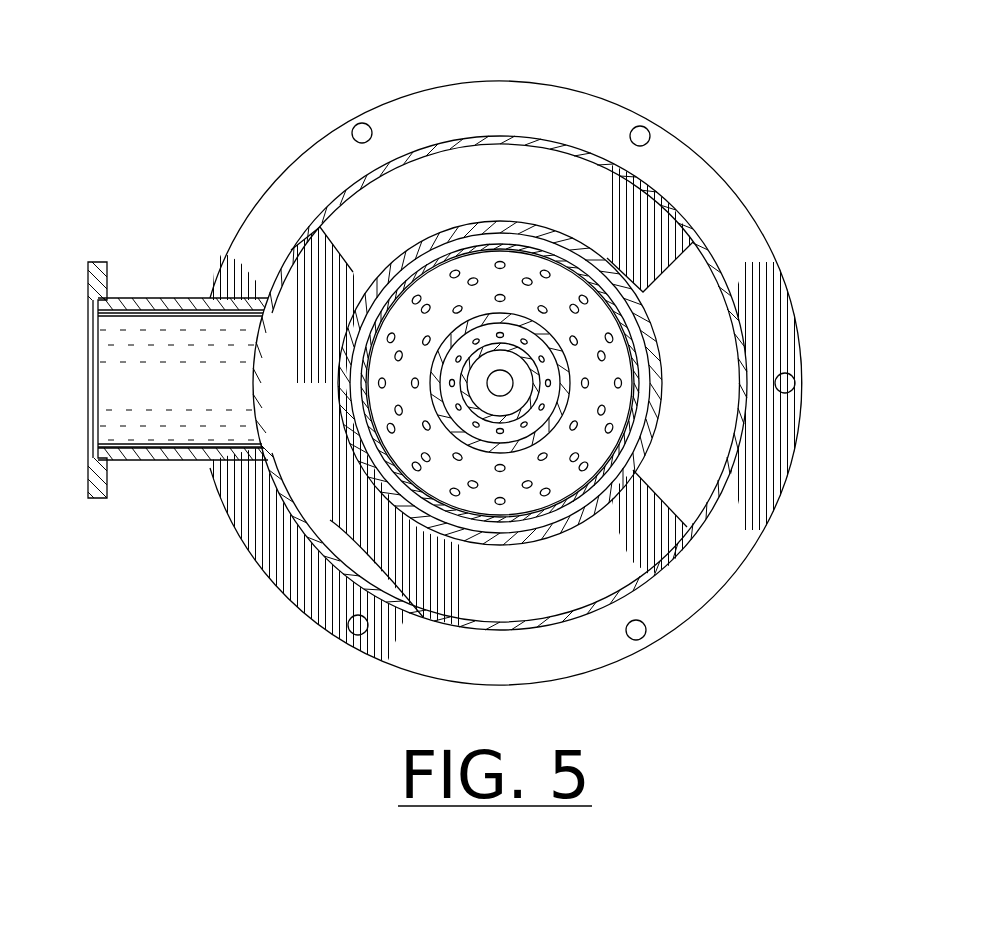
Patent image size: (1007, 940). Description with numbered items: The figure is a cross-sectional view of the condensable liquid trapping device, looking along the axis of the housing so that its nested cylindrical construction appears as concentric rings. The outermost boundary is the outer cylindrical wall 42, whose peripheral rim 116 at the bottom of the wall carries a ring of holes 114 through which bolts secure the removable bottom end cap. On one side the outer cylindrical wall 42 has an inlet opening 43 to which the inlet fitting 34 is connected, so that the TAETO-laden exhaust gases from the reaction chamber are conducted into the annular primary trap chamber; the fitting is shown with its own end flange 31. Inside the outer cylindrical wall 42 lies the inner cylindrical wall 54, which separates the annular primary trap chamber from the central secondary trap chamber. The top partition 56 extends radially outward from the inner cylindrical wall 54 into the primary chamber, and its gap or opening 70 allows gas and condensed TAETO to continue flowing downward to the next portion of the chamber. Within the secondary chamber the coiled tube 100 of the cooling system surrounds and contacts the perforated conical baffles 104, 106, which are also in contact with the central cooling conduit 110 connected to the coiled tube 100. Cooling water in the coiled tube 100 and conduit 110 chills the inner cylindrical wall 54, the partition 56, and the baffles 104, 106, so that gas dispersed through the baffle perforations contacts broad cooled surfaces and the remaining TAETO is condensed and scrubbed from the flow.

The inlet flange 31 is at (88, 262).
The inlet fitting 34 is at (137, 298).
The outer cylindrical wall 42 is at (275, 492).
The inlet opening 43 is at (253, 385).
The inner cylindrical wall 54 is at (397, 518).
The top partition 56 is at (348, 537).
The gap or opening 70 is at (657, 497).
The coiled tube 100 is at (422, 522).
The perforated conical baffle 104 is at (513, 333).
The perforated conical baffle 106 is at (577, 290).
The central cooling conduit 110 is at (490, 347).
The holes 114 is at (362, 122).
The peripheral rim 116 is at (367, 123).